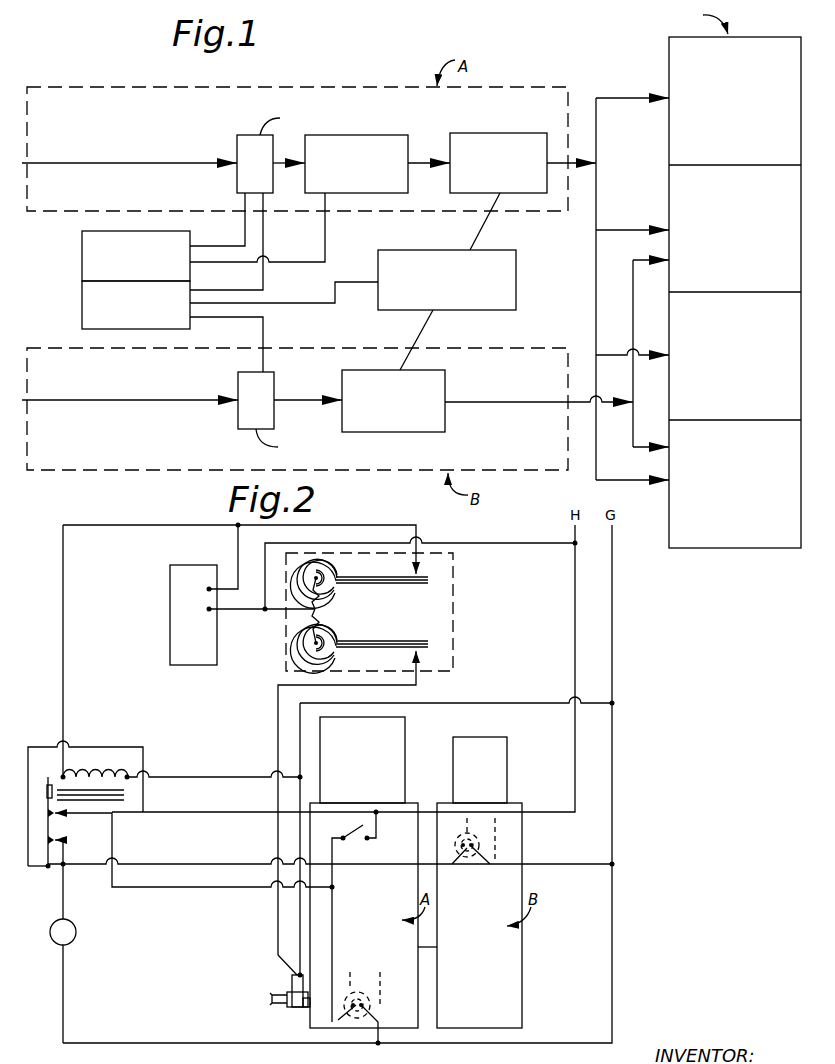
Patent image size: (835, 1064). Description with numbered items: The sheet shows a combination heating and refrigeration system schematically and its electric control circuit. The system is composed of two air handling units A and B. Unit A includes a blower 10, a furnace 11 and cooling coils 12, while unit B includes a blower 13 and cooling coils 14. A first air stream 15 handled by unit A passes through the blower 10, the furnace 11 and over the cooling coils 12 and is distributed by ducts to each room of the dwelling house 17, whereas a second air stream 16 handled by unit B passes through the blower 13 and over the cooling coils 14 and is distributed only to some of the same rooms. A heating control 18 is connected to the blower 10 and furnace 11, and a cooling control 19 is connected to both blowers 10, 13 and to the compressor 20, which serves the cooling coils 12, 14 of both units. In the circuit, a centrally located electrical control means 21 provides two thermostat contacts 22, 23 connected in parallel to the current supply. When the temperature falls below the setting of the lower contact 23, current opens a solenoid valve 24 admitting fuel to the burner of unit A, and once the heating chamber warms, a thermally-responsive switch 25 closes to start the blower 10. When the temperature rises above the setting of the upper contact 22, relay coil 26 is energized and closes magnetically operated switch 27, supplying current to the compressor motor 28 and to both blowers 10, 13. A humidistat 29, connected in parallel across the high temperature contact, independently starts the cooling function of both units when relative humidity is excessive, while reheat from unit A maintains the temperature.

In FIG. 1, the blower 10 is at (247, 176).
In FIG. 2, the blower 10 is at (358, 992).
In FIG. 1, the furnace 11 is at (381, 141).
In FIG. 1, the cooling coils 12 is at (492, 138).
In FIG. 1, the blower 13 is at (265, 389).
In FIG. 2, the blower 13 is at (470, 862).
In FIG. 1, the cooling coils 14 is at (428, 433).
In FIG. 1, the first air stream 15 is at (96, 165).
In FIG. 1, the second air stream 16 is at (117, 402).
In FIG. 1, the dwelling house 17 is at (669, 68).
In FIG. 1, the heating control 18 is at (87, 254).
In FIG. 1, the cooling control 19 is at (87, 298).
In FIG. 1, the compressor 20 is at (497, 311).
In FIG. 2, the electrical control means 21 is at (393, 613).
In FIG. 2, the circuit-closing contact 22 is at (352, 588).
In FIG. 2, the circuit-closing contact 23 is at (350, 652).
In FIG. 2, the solenoid valve 24 is at (292, 984).
In FIG. 2, the thermally-responsive switch 25 is at (355, 841).
In FIG. 2, the relay coil 26 is at (101, 763).
In FIG. 2, the magnetically operated switch 27 is at (58, 831).
In FIG. 2, the motor 28 is at (77, 932).
In FIG. 2, the humidistat 29 is at (183, 606).